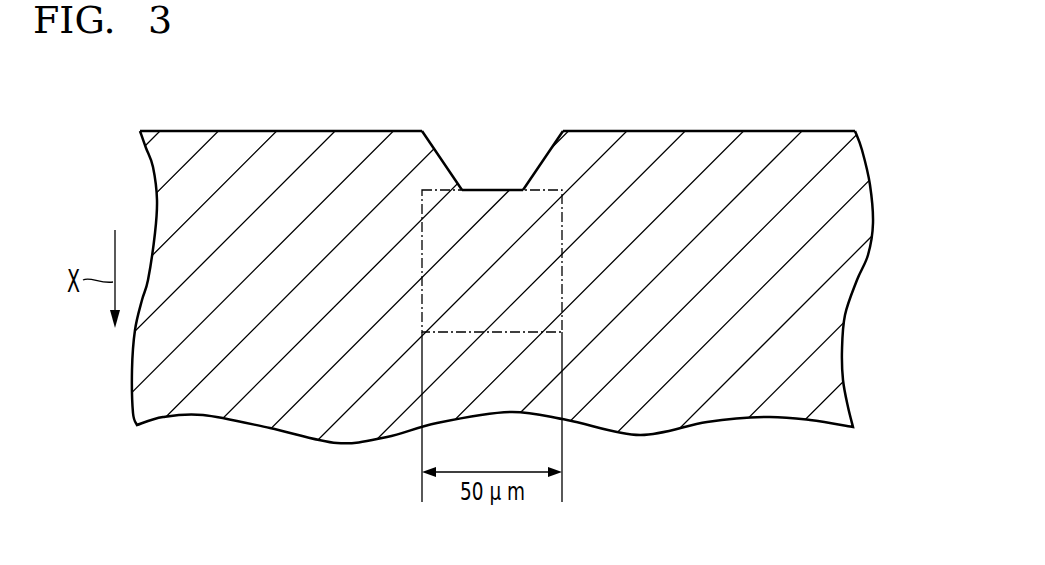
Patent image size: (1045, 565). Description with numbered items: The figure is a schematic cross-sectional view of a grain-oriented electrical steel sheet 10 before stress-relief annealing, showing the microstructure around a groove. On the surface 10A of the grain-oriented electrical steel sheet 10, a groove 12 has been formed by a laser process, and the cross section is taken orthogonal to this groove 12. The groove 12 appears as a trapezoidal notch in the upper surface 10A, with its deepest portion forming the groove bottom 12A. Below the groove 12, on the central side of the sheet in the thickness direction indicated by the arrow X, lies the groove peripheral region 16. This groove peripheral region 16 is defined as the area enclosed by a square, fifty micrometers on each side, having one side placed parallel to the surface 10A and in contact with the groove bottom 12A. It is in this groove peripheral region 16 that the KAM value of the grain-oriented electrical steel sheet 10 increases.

The grain-oriented electrical steel sheet 10 is at (858, 218).
The surface 10A is at (666, 131).
The groove 12 is at (536, 163).
The groove bottom 12A is at (493, 190).
The groove peripheral region 16 is at (422, 233).